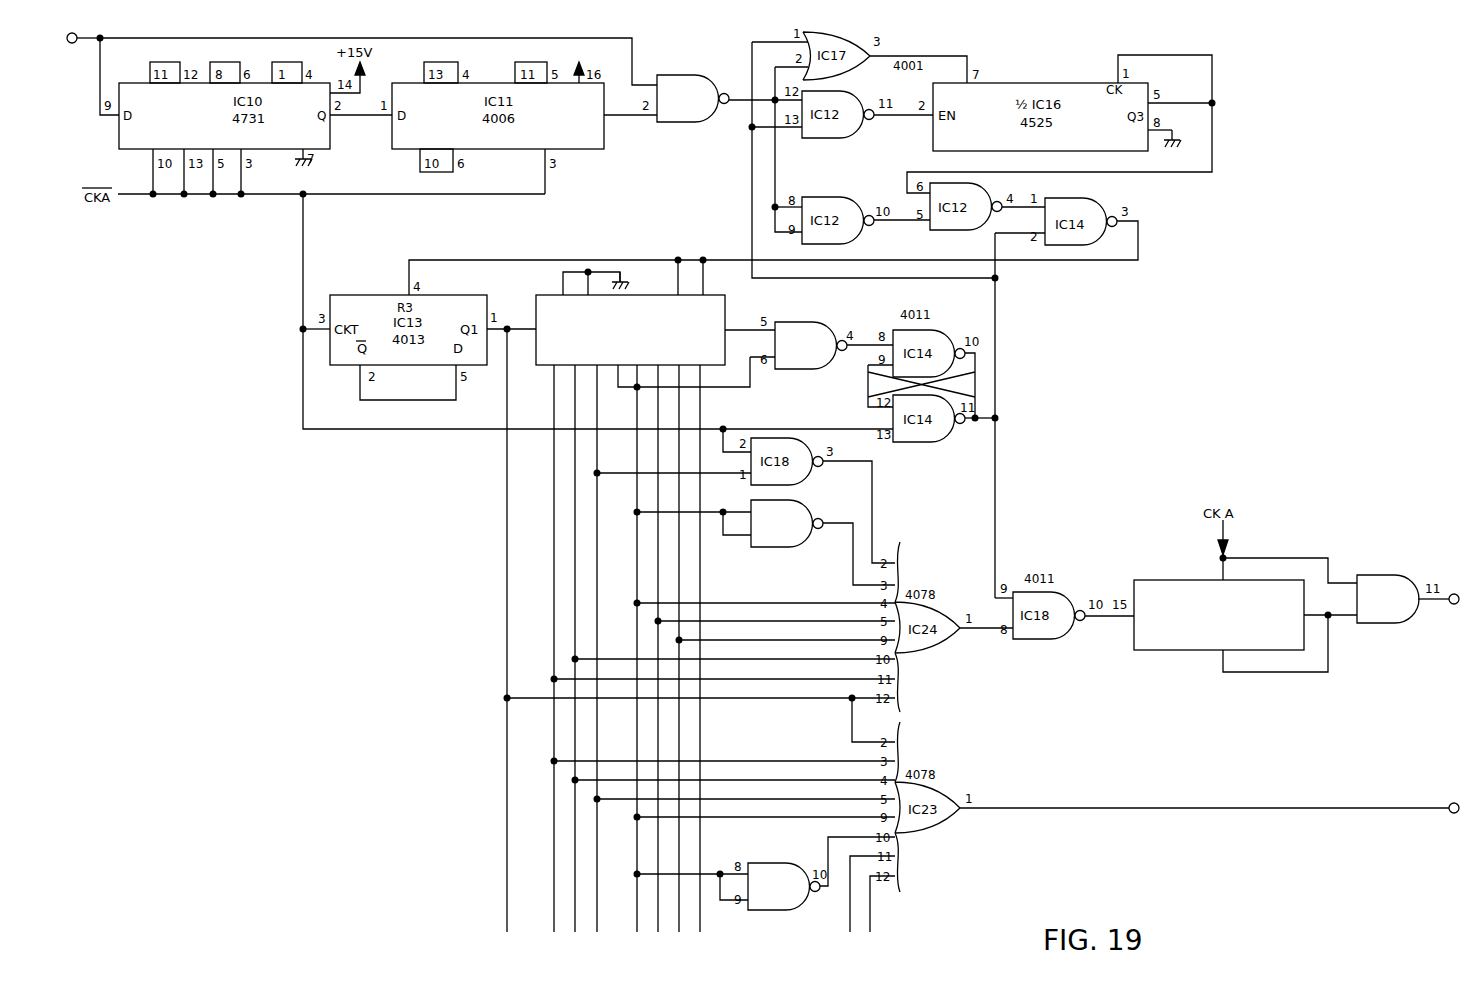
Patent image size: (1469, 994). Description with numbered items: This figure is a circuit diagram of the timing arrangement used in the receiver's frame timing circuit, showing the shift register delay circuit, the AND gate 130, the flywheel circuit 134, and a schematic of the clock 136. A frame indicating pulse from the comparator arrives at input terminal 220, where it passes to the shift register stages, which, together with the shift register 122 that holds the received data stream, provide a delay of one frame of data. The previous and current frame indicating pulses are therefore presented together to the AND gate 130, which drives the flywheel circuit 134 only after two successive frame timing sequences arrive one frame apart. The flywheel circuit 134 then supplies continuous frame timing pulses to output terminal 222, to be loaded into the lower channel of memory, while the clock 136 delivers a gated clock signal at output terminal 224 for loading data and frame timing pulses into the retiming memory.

The input terminal 220 is at (72, 47).
The shift register 122 is at (350, 125).
The AND gate 130 is at (683, 133).
The flywheel circuit 134 is at (893, 304).
The clock 136 is at (1263, 545).
The output terminal 222 is at (1449, 802).
The output terminal 224 is at (1448, 591).